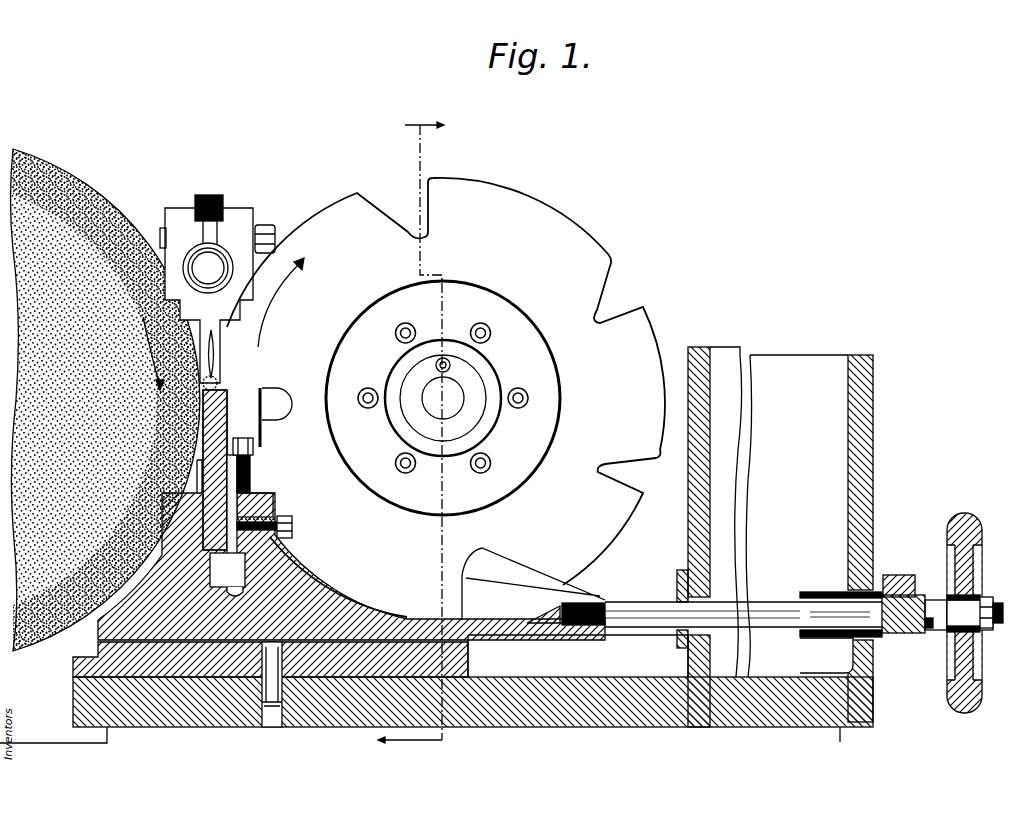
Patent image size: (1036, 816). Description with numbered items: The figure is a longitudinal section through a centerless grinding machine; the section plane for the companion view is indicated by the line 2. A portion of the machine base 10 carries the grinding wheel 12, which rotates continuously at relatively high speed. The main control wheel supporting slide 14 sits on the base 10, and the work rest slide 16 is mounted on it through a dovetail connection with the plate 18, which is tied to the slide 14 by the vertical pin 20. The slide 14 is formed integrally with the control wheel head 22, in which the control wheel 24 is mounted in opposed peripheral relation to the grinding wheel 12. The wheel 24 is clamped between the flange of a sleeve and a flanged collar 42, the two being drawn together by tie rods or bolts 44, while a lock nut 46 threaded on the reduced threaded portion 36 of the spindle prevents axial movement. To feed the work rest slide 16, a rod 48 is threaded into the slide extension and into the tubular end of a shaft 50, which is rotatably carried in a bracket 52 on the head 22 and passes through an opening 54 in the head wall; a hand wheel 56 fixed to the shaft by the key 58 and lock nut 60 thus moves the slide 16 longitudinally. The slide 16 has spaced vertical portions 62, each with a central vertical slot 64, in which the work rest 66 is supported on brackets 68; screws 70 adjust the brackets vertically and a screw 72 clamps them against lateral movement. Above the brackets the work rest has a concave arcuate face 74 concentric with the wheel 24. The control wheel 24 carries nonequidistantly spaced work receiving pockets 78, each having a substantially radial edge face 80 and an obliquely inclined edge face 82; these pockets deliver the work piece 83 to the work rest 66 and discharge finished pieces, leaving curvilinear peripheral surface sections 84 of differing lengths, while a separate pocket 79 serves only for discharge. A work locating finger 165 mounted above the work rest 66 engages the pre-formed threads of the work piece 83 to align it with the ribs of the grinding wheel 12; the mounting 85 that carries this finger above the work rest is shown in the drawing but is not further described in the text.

The section line 2- 2 is at (411, 429).
The machine base 10 is at (93, 742).
The grinding wheel 12 is at (105, 400).
The main control wheel supporting slide 14 is at (577, 721).
The work rest slide 16 is at (565, 635).
The plate 18 is at (466, 661).
The vertical pin 20 is at (273, 718).
The control wheel head 22 is at (680, 357).
The control wheel 24 is at (581, 242).
The threaded portion of spindle 36 is at (455, 407).
The flanged collar 42 is at (455, 300).
The tie rods or bolts 44 is at (512, 390).
The lock nut 46 is at (402, 412).
The rod 48 is at (657, 630).
The shaft 50 is at (828, 640).
The bracket 52 is at (897, 577).
The opening 54 is at (880, 589).
The hand wheel 56 is at (957, 513).
The key 58 is at (970, 589).
The lock nut 60 is at (982, 628).
The spaced vertical portions 62 is at (168, 520).
The central vertical slot 64 is at (233, 571).
The work rest 66 is at (197, 462).
The brackets 68 is at (254, 493).
The screws 70 is at (262, 447).
The screw 72 is at (294, 524).
The concave arcuate side face 74 is at (222, 437).
The work receiving pockets 78 is at (203, 410).
The discharging pocket 79 is at (478, 549).
The radial edge face 80 is at (222, 386).
The obliquely inclined edge face 82 is at (283, 408).
The work piece 83 is at (203, 389).
The curvilinear peripheral surface sections 84 is at (361, 600).
The wheel holder 85 is at (117, 210).
The work locating finger 165 is at (203, 365).